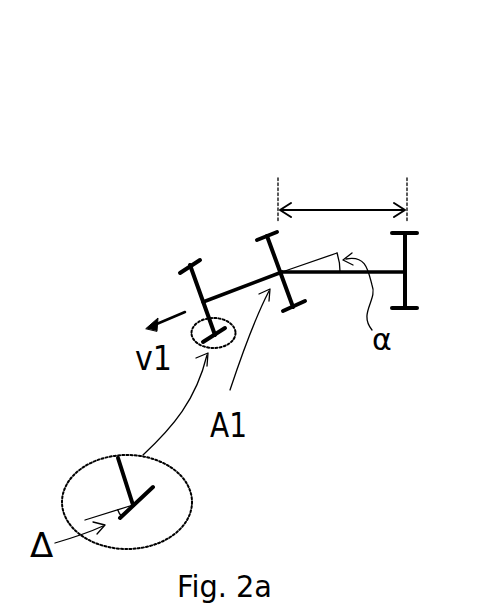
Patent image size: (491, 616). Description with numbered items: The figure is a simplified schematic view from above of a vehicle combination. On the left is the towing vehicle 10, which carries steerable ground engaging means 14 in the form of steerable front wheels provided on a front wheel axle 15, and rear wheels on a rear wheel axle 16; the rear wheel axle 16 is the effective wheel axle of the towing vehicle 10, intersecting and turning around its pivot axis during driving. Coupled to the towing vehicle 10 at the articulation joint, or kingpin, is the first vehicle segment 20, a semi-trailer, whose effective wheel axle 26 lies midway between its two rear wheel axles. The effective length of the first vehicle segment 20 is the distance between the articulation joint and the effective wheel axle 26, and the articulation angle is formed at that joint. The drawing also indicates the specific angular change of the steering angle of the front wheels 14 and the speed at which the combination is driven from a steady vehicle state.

The towing vehicle 10 is at (225, 186).
The steerable ground engaging means 14 is at (192, 246).
The front wheel axle 15 is at (197, 298).
The rear wheel axle 16 is at (302, 291).
The first vehicle segment 20 is at (392, 171).
The effective wheel axle 26 is at (405, 285).